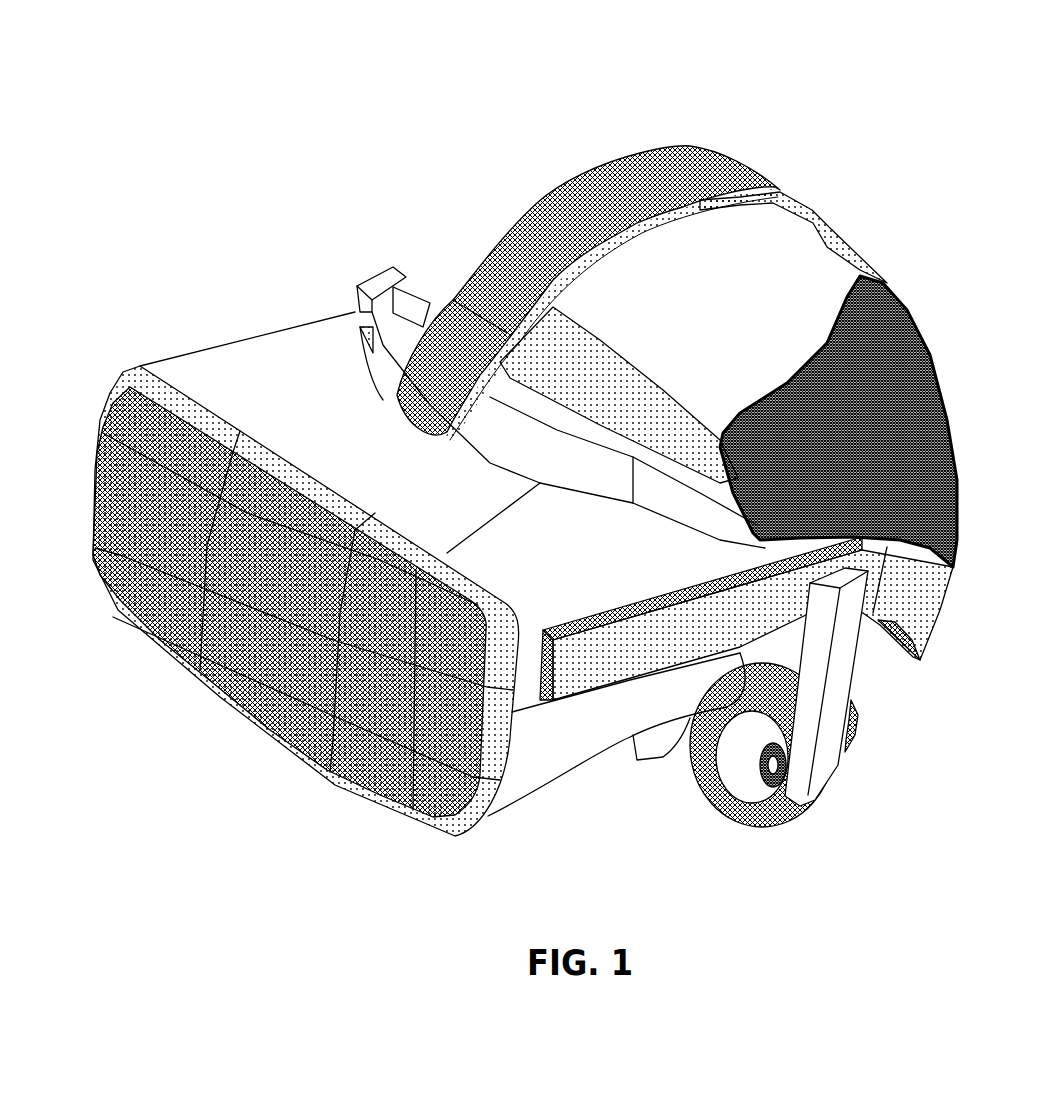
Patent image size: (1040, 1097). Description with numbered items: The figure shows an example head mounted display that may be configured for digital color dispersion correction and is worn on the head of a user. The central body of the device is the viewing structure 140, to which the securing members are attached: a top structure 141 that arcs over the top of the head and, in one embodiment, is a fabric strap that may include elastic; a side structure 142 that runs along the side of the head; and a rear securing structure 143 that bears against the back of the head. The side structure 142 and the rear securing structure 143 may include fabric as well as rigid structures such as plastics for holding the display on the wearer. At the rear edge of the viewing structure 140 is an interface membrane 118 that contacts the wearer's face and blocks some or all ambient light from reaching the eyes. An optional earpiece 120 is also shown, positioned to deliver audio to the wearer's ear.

The interface membrane 118 is at (423, 290).
The earpiece 120 is at (843, 793).
The viewing structure 140 is at (463, 574).
The top structure 141 is at (741, 162).
The side structure 142 is at (624, 347).
The rear securing structure 143 is at (937, 367).